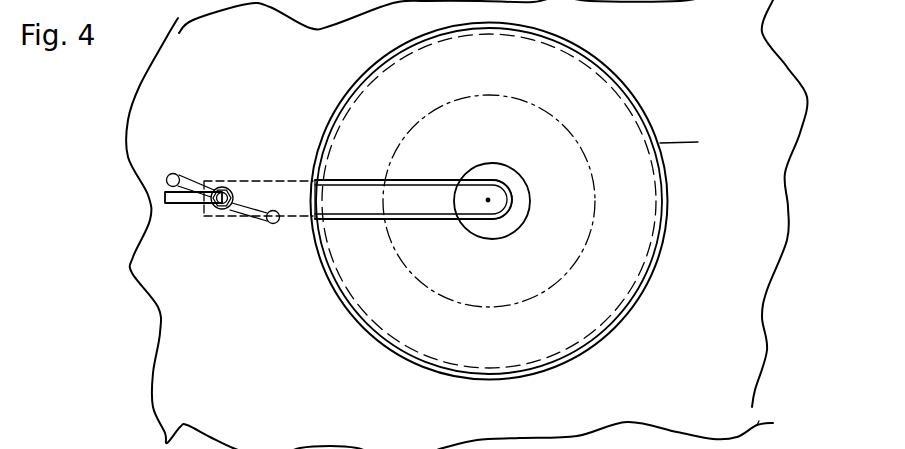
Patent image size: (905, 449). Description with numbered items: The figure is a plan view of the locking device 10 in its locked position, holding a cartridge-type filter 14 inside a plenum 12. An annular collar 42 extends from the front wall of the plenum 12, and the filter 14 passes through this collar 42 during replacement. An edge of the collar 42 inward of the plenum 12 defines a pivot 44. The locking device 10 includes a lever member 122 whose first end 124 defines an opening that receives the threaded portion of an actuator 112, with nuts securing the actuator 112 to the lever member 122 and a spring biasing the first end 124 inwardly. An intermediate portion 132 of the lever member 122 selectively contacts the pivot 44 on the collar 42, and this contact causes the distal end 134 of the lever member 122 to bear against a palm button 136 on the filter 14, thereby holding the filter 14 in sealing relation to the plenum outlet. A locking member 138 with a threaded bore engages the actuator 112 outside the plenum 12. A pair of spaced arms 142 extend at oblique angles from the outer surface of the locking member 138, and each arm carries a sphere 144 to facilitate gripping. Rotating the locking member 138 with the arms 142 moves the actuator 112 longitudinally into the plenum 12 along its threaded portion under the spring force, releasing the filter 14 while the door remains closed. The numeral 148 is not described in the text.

The locking device 10 is at (108, 241).
The plenum 12 is at (783, 180).
The cartridge-type filter 14 is at (610, 273).
The annular collar 42 is at (692, 144).
The pivot 44 is at (315, 182).
The actuator 112 is at (179, 205).
The lever member 122 is at (405, 205).
The first end 124 is at (209, 207).
The intermediate portion 132 is at (317, 185).
The distal end 134 is at (493, 205).
The palm button 136 is at (522, 183).
The locking member 138 is at (212, 187).
The arms 142 is at (192, 180).
The sphere 144 is at (172, 172).
The hub 148 is at (515, 197).